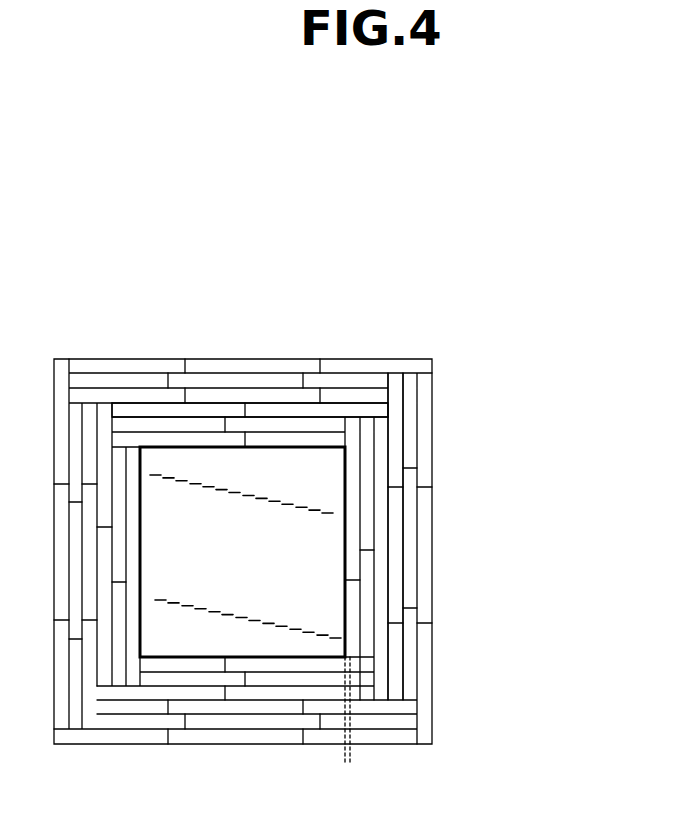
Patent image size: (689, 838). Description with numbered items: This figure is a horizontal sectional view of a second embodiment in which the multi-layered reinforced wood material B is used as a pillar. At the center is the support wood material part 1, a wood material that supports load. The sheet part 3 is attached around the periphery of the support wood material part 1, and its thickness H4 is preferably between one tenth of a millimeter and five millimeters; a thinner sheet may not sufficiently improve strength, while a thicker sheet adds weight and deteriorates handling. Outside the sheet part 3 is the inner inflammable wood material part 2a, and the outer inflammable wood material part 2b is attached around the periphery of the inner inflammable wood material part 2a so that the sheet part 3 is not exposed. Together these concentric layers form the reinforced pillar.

The support wood material part 1 is at (242, 552).
The inner inflammable wood material part 2a is at (295, 412).
The outer inflammable wood material part 2b is at (393, 408).
The sheet part 3 is at (162, 446).
The multi-layered reinforced wood material B is at (453, 350).
The thickness of the sheet part H4 is at (368, 760).